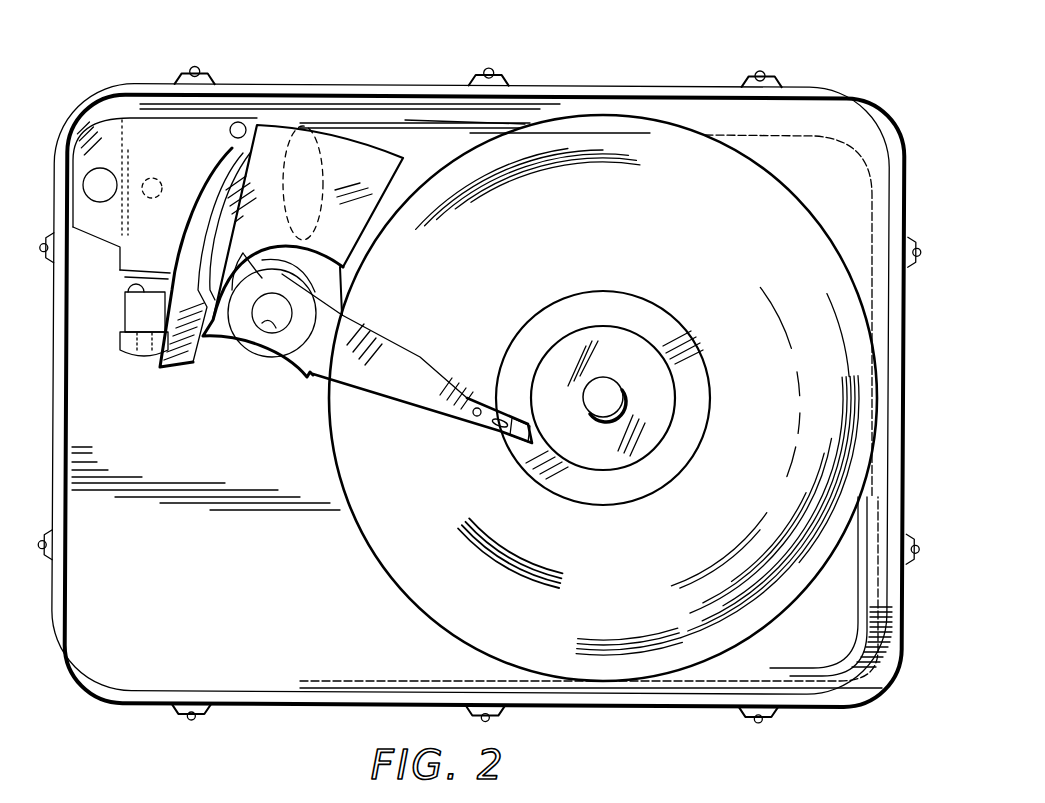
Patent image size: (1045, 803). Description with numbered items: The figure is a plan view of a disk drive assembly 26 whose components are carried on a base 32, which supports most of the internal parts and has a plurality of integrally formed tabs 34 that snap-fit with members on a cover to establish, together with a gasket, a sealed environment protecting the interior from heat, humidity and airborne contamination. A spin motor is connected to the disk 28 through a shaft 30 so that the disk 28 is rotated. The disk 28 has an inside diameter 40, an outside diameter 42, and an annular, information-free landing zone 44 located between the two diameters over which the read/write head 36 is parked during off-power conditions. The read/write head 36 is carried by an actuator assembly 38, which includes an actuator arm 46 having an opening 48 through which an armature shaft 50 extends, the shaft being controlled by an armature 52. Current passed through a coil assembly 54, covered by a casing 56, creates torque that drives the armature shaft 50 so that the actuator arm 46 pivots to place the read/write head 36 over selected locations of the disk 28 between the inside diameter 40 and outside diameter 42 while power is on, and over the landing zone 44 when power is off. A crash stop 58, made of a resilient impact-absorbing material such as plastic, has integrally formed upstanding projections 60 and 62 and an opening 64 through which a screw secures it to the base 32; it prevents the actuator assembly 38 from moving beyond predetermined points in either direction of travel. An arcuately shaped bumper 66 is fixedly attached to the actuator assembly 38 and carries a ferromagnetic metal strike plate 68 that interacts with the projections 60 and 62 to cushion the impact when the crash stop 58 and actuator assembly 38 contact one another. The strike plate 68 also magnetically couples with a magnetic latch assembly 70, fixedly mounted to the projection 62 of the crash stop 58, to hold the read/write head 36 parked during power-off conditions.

The disk drive assembly 26 is at (704, 66).
The disk 28 is at (797, 246).
The shaft 30 is at (608, 392).
The base 32 is at (610, 86).
The tabs 34 is at (762, 80).
The read/write head 36 is at (520, 432).
The actuator assembly 38 is at (296, 110).
The inside diameter 40 is at (662, 430).
The outside diameter 42 is at (400, 590).
The landing zone 44 is at (637, 490).
The actuator arm 46 is at (382, 390).
The opening 48 is at (283, 330).
The armature shaft 50 is at (278, 318).
The armature 52 is at (350, 142).
The coil assembly 54 is at (318, 163).
The casing 56 is at (395, 144).
The crash stop 58 is at (131, 103).
The upstanding projection 60 is at (240, 122).
The upstanding projection 62 is at (122, 352).
The opening 64 is at (105, 180).
The arcuately shaped bumper 66 is at (190, 190).
The strike plate 68 is at (123, 272).
The magnetic latch assembly 70 is at (117, 320).